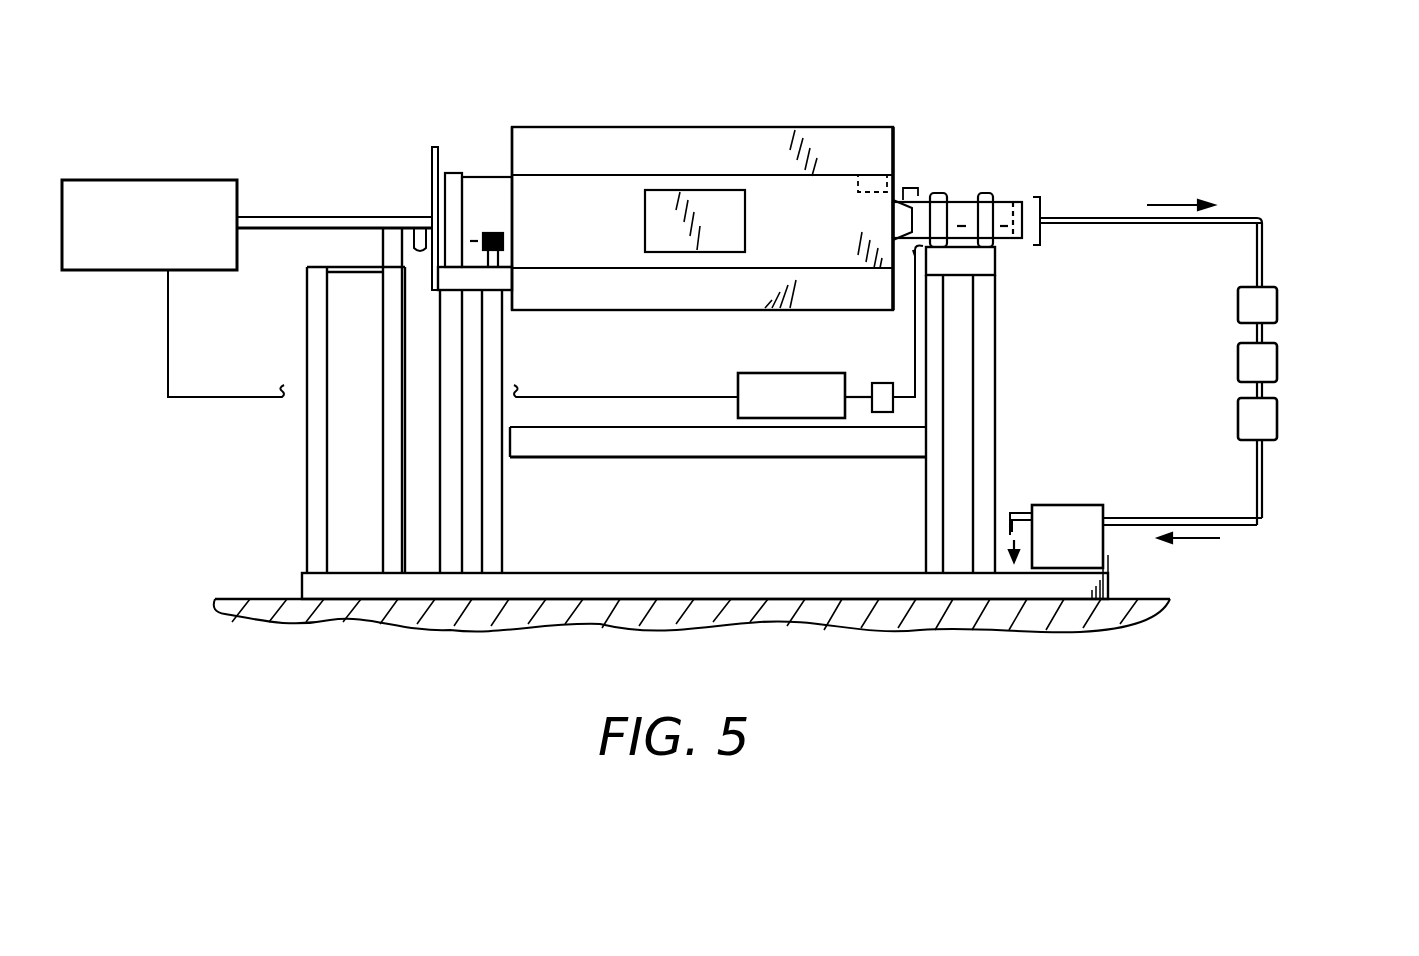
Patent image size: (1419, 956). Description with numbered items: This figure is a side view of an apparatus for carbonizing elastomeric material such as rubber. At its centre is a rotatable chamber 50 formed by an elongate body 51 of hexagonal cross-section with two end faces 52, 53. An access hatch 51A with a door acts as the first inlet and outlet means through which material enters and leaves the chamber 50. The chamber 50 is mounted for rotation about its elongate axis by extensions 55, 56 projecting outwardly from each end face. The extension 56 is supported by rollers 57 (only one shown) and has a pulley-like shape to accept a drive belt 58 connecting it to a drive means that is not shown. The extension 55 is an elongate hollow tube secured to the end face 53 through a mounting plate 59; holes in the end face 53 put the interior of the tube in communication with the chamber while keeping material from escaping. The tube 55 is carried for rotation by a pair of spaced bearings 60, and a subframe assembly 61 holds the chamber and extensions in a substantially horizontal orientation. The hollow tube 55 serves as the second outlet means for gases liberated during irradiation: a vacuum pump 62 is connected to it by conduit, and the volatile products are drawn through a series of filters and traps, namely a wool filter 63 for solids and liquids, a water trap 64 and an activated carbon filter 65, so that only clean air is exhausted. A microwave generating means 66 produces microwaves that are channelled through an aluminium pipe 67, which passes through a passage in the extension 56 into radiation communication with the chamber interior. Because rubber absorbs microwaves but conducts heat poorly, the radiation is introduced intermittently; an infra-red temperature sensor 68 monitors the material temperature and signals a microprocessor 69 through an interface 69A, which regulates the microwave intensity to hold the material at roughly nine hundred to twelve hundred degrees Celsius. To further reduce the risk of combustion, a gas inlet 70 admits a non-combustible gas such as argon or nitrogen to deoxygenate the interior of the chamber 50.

The rotatable chamber 50 is at (663, 100).
The elongate body 51 is at (588, 127).
The access hatch 51A is at (715, 200).
The end face 52 is at (500, 137).
The end face 53 is at (897, 150).
The extension 55 is at (963, 200).
The extension 56 is at (487, 185).
The rollers 57 is at (503, 248).
The drive belt 58 is at (452, 198).
The mounting plate 59 is at (897, 172).
The bearings 60 is at (932, 197).
The subframe assembly 61 is at (1030, 459).
The vacuum pump 62 is at (1072, 522).
The wool filter 63 is at (1265, 309).
The water trap 64 is at (1265, 366).
The activated carbon filter 65 is at (1265, 425).
The microwave generating means 66 is at (102, 190).
The aluminium pipe 67 is at (285, 216).
The infra red temperature sensor 68 is at (870, 176).
The microprocessor 69 is at (815, 383).
The interface 69A is at (882, 412).
The gas inlet 70 is at (402, 243).